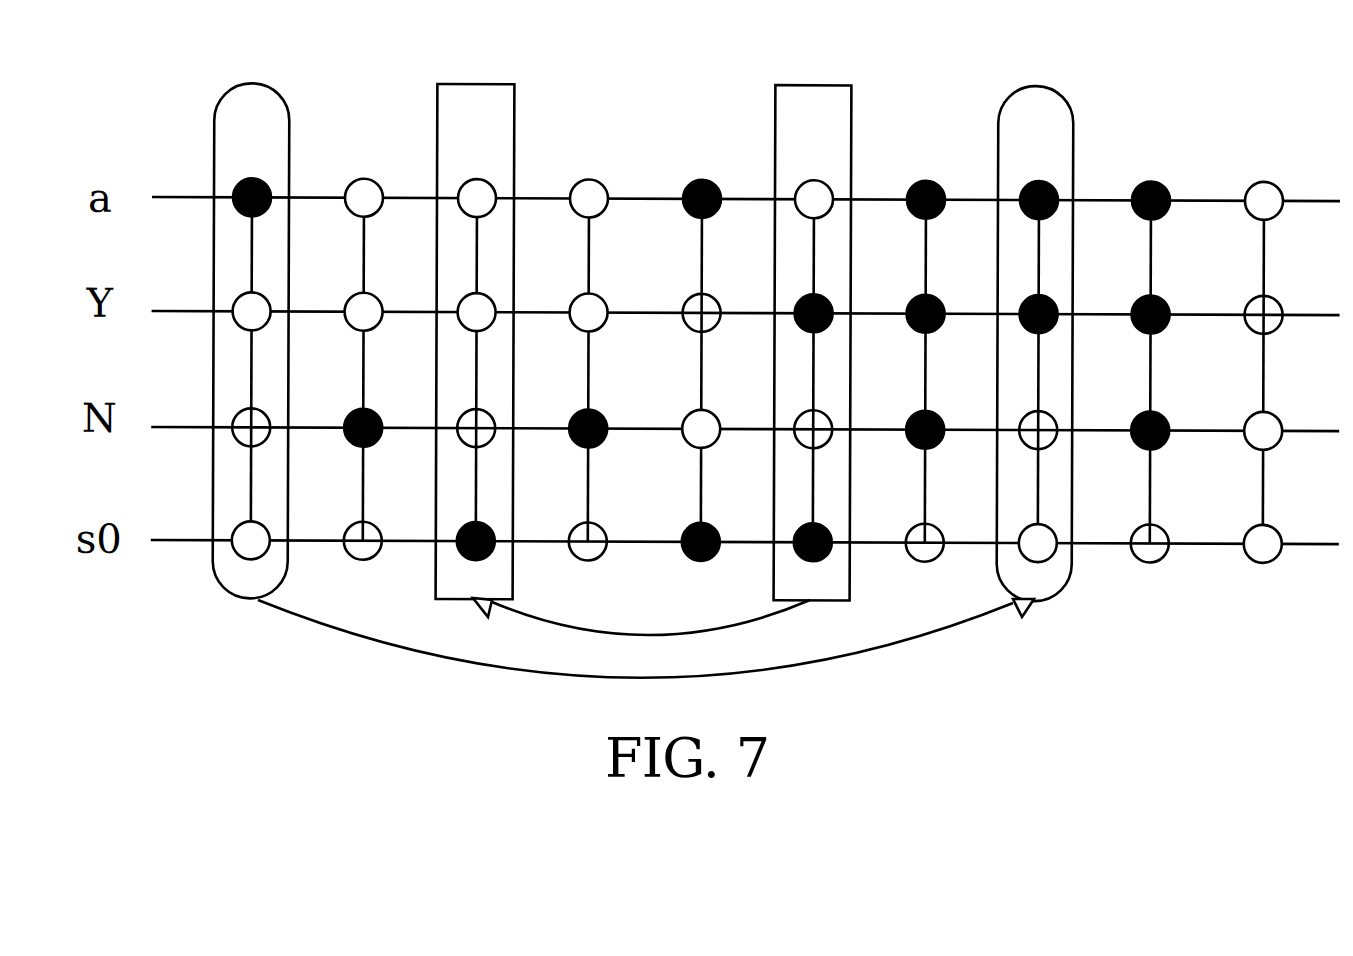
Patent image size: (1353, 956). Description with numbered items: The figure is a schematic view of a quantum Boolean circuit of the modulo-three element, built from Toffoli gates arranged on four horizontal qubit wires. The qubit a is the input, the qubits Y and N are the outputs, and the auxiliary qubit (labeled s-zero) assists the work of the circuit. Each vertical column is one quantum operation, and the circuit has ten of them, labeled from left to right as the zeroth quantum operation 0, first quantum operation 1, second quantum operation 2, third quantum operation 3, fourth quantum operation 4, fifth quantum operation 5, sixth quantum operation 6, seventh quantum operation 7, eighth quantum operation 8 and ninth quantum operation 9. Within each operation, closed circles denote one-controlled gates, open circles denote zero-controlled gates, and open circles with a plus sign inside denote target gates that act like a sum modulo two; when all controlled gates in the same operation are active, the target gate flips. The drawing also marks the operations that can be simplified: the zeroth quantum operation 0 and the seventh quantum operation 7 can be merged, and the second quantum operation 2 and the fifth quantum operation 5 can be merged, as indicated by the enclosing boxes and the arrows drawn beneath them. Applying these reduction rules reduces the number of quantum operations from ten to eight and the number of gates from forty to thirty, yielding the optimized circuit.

The zeroth quantum operation 0 is at (251, 340).
The first quantum operation 1 is at (364, 331).
The second quantum operation 2 is at (475, 341).
The third quantum operation 3 is at (589, 331).
The fourth quantum operation 4 is at (702, 332).
The fifth quantum operation 5 is at (813, 342).
The sixth quantum operation 6 is at (926, 333).
The seventh quantum operation 7 is at (1035, 343).
The eighth quantum operation 8 is at (1151, 333).
The ninth quantum operation 9 is at (1264, 334).